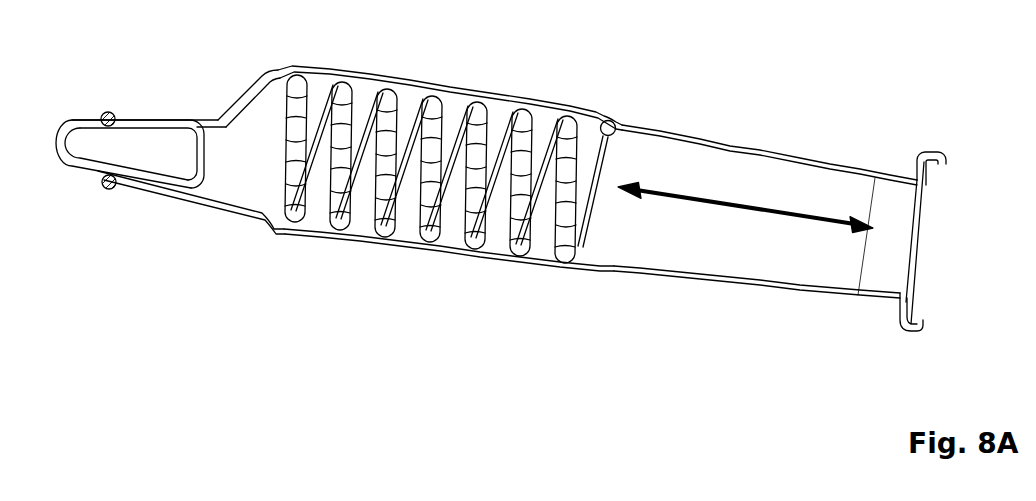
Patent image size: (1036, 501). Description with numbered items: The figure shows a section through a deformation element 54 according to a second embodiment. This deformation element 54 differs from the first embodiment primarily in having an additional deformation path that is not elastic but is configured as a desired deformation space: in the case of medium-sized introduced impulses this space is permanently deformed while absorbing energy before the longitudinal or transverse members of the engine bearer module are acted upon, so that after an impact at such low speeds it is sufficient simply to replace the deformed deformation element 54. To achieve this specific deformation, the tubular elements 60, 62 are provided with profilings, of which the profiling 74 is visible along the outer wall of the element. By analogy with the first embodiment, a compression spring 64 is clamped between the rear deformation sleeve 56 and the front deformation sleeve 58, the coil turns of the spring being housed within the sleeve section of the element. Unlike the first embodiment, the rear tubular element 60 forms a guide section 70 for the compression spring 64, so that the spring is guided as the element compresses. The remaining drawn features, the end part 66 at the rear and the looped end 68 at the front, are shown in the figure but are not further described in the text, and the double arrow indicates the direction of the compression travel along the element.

The deformation element 54 is at (755, 73).
The rear deformation sleeve 56 is at (818, 143).
The front deformation sleeve 58 is at (505, 85).
The rear tubular element 60 is at (800, 288).
The tubular element 62 is at (408, 248).
The compression spring 64 is at (427, 230).
The clip bar 66 is at (893, 263).
The wire loop end 68 is at (244, 104).
The guide section 70 is at (547, 243).
The profiling 74 is at (563, 102).